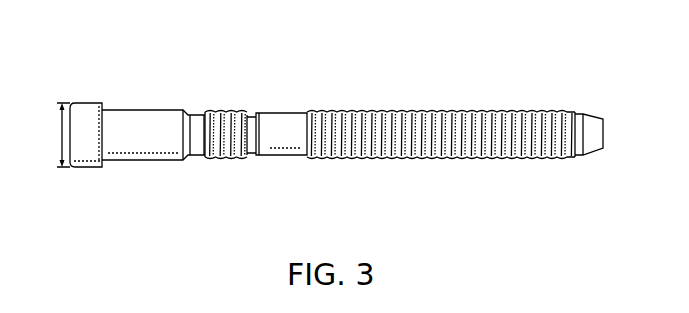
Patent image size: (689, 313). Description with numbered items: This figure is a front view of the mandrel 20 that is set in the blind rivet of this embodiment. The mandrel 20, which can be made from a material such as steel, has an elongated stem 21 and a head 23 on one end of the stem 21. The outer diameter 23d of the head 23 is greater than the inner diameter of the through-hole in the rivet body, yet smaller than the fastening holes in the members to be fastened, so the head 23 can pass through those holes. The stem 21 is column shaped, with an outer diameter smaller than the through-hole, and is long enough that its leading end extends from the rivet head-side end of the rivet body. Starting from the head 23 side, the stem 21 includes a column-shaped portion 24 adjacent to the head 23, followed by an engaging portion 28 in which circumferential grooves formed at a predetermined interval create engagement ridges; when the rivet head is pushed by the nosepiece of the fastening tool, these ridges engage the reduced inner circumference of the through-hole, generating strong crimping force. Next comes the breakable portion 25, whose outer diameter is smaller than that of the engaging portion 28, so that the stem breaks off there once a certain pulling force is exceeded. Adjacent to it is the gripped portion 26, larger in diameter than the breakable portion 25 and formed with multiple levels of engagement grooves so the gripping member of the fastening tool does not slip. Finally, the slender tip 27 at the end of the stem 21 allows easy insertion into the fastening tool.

The mandrel 20 is at (394, 63).
The stem 21 is at (285, 113).
The head 23 is at (81, 103).
The outer diameter of the head 23d is at (63, 150).
The column-shaped portion 24 is at (129, 109).
The breakable portion 25 is at (250, 114).
The gripped portion 26 is at (490, 112).
The tip 27 is at (597, 118).
The engaging portion 28 is at (213, 112).